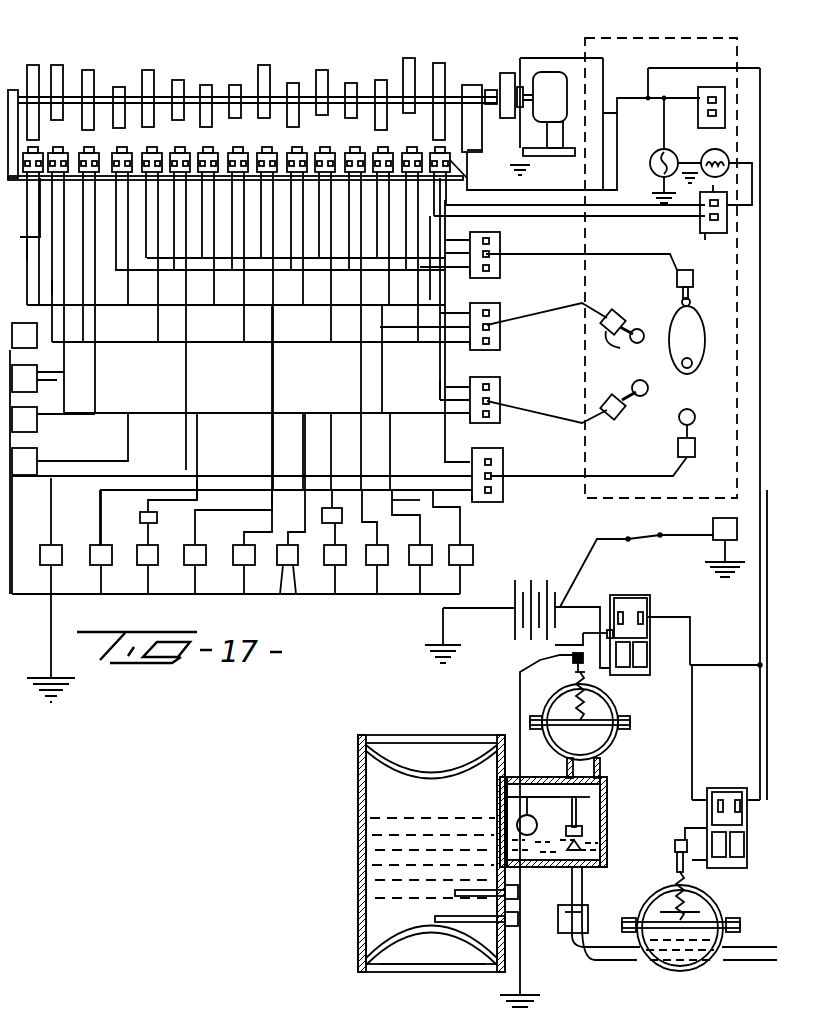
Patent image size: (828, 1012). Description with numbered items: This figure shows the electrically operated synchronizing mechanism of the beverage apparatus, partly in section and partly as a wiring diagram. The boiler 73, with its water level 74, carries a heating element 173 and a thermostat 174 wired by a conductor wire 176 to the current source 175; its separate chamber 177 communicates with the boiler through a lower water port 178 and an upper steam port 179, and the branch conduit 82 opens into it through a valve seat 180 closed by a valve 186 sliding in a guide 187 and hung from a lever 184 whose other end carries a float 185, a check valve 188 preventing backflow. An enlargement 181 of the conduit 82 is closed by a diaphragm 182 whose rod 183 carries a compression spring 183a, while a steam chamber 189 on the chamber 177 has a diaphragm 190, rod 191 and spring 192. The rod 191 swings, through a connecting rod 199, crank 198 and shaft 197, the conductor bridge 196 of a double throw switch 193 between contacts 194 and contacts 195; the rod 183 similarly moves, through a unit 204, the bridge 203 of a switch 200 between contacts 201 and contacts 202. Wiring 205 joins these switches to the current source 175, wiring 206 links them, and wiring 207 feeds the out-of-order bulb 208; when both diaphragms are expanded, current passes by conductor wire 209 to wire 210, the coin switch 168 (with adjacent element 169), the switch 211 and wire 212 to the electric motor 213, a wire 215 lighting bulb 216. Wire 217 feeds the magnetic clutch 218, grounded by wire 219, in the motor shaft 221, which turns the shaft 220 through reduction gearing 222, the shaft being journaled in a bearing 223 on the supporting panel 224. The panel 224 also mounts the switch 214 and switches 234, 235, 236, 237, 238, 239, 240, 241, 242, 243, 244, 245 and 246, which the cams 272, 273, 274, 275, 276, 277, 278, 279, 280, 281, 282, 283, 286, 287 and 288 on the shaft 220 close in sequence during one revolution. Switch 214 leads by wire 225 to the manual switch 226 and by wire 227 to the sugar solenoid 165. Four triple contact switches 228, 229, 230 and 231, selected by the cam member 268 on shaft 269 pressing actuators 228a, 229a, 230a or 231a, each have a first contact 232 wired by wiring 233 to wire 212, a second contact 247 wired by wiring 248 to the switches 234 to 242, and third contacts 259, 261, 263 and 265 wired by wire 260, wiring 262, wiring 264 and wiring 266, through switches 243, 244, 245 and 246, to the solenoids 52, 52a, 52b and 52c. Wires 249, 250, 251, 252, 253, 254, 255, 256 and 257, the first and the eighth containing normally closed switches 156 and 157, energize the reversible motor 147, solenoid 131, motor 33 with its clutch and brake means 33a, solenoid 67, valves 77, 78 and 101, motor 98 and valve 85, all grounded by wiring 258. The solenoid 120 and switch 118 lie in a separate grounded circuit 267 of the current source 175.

The bearing 223 is at (14, 90).
The cam 288 is at (38, 66).
The cam 287 is at (62, 66).
The cam 286 is at (95, 70).
The cam 277 is at (121, 87).
The cam 283 is at (154, 70).
The cam 282 is at (178, 80).
The cam 281 is at (208, 85).
The cam 280 is at (236, 85).
The cam 279 is at (264, 65).
The cam 278 is at (294, 83).
The shaft 220 is at (308, 97).
The cam 276 is at (326, 70).
The cam 275 is at (351, 83).
The cam 274 is at (381, 80).
The cam 273 is at (409, 58).
The cam 272 is at (439, 63).
The reduction gearing 222 is at (467, 85).
The motor shaft 221 is at (491, 90).
The magnetic clutch 218 is at (506, 73).
The wire 217 is at (530, 58).
The electric motor 213 is at (552, 72).
The switch 211 is at (526, 124).
The wire 219 is at (480, 150).
The supporting bar or panel 224 is at (508, 150).
The wire 212 is at (525, 205).
The wire 225 is at (538, 208).
The wire 227 is at (625, 217).
The conductor wire 209 is at (760, 165).
The relay 169 is at (712, 87).
The switch 168 is at (716, 106).
The wire 215 is at (645, 123).
The conductor wire 210 is at (664, 141).
The light bulb 216 is at (655, 173).
The light bulb 208 is at (715, 169).
The manually operated switch 226 is at (727, 212).
The switch 246 is at (36, 182).
The switch 245 is at (58, 150).
The switch 244 is at (96, 140).
The switch 243 is at (125, 141).
The switch 242 is at (155, 140).
The switch 241 is at (180, 150).
The switch 240 is at (212, 140).
The switch 239 is at (238, 150).
The switch 238 is at (272, 140).
The switch 237 is at (300, 141).
The switch 236 is at (325, 150).
The switch 235 is at (358, 140).
The switch 234 is at (387, 140).
The electric switch 214 is at (414, 150).
The wire 260 is at (125, 272).
The wiring 262 is at (116, 344).
The wiring 266 is at (28, 265).
The wiring 264 is at (52, 290).
The wiring 248 is at (385, 316).
The normally closed switch 156 is at (393, 455).
The solenoid 52c is at (32, 333).
The solenoid 52b is at (40, 375).
The solenoid 52a is at (33, 413).
The solenoid 52 is at (33, 456).
The wire 257 is at (50, 483).
The wiring 258 is at (180, 594).
The valve 85 is at (62, 553).
The reversible motor 147 is at (112, 553).
The motor 98 is at (158, 553).
The valve 101 is at (140, 520).
The valve 78 is at (206, 555).
The valve 77 is at (237, 545).
The solenoid 67 is at (285, 566).
The electric motor 33 is at (325, 523).
The clutch and brake means 33a is at (335, 566).
The solenoid 131 is at (370, 570).
The wire 249 is at (418, 542).
The solenoid 165 is at (473, 556).
The wire 256 is at (100, 495).
The normally closed switch 157 is at (188, 503).
The wire 254 is at (217, 512).
The wire 255 is at (192, 512).
The electric wire 253 is at (276, 462).
The wire 252 is at (305, 468).
The wire 250 is at (357, 440).
The wire 251 is at (358, 465).
The second contact 247 is at (486, 257).
The triple contact switch 228 is at (501, 268).
The third contact 259 is at (487, 268).
The first contact 232 is at (489, 307).
The triple contact switch 229 is at (487, 324).
The third contact 261 is at (487, 334).
The wiring 233 is at (448, 384).
The triple contact switch 230 is at (506, 398).
The third contact 263 is at (492, 417).
The triple contact switch 231 is at (490, 476).
The third contact 265 is at (490, 487).
The push type actuator 228a is at (677, 279).
The cam member 268 is at (693, 330).
The shaft 269 is at (692, 366).
The push type actuator 229a is at (622, 340).
The push type actuator 230a is at (626, 408).
The push type actuator 231a is at (678, 444).
The solenoid 120 is at (725, 518).
The switch 118 is at (645, 537).
The grounded circuit 267 is at (612, 538).
The current source 175 is at (538, 583).
The wiring 205 is at (587, 600).
The double throw switch 193 is at (638, 596).
The contacts 194 is at (623, 617).
The contacts 195 is at (640, 660).
The shaft 197 is at (590, 636).
The crank 198 is at (558, 645).
The connecting rod 199 is at (573, 658).
The rod 191 is at (573, 681).
The compression spring 192 is at (586, 712).
The conductor bridge 196 is at (650, 664).
The diaphragm 190 is at (612, 722).
The steam chamber 189 is at (617, 748).
The conductor wire 176 is at (520, 693).
The lever 184 is at (567, 771).
The chamber 177 is at (608, 801).
The upper steam port 179 is at (502, 797).
The lower water port 178 is at (500, 835).
The float 185 is at (537, 822).
The guide 187 is at (600, 819).
The valve 186 is at (600, 843).
The valve seat 180 is at (580, 858).
The check valve 188 is at (560, 935).
The boiler 73 is at (358, 913).
The liquid 74 is at (380, 837).
The thermostat 174 is at (518, 894).
The heating element 173 is at (470, 923).
The diaphragm 182 is at (718, 908).
The enlargement 181 is at (700, 968).
The branch conduit 82 is at (765, 961).
The rod 183 is at (672, 892).
The compression spring 183a is at (670, 908).
The shaft, crank and connecting rod unit 204 is at (690, 822).
The switch 200 is at (729, 790).
The contacts 201 is at (748, 796).
The contacts 202 is at (745, 849).
The bridge 203 is at (745, 866).
The wiring 206 is at (693, 753).
The wiring 207 is at (737, 666).